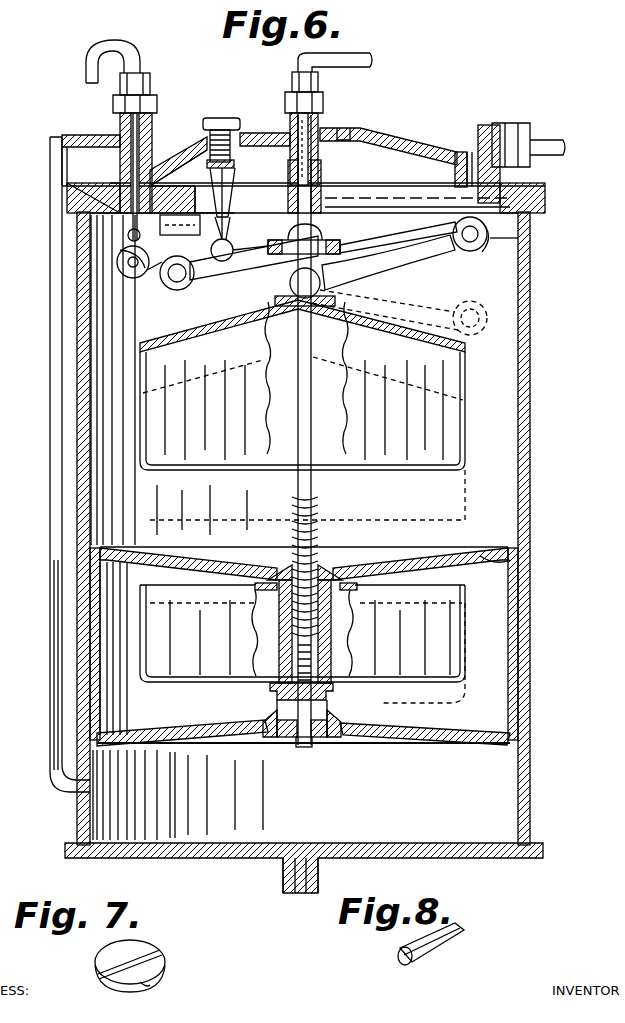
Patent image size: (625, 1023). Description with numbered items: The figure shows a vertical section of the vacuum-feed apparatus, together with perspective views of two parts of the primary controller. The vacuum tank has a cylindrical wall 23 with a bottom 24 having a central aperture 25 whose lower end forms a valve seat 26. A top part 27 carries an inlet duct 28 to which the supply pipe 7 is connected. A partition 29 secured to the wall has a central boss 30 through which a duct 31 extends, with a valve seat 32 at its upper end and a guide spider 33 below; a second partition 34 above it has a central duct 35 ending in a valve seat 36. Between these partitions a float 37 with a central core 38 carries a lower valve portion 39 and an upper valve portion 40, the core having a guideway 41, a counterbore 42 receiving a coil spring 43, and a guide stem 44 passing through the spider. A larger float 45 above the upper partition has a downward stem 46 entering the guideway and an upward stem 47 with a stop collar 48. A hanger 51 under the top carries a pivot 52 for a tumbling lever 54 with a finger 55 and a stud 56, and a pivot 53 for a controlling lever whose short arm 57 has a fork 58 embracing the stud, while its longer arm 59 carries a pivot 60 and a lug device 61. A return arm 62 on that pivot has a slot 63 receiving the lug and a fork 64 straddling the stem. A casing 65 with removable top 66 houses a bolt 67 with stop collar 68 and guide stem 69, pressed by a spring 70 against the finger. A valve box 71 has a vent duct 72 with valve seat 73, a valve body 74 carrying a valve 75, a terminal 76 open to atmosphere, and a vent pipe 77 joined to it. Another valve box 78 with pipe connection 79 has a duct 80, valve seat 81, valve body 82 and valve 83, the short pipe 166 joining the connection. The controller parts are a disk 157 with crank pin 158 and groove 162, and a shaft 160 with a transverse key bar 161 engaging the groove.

In FIG. 6, the supply pipe 7 is at (545, 143).
In FIG. 6, the cylindrical wall 23 is at (530, 495).
In FIG. 6, the bottom 24 is at (188, 857).
In FIG. 6, the central aperture 25 is at (285, 873).
In FIG. 6, the valve seat 26 is at (302, 893).
In FIG. 6, the top part 27 is at (370, 128).
In FIG. 6, the inlet duct 28 is at (465, 148).
In FIG. 6, the partition 29 is at (490, 737).
In FIG. 6, the central boss 30 is at (343, 740).
In FIG. 6, the duct 31 is at (342, 724).
In FIG. 6, the valve seat 32 is at (266, 722).
In FIG. 6, the guide spider 33 is at (318, 745).
In FIG. 6, the partition 34 is at (518, 562).
In FIG. 6, the central duct 35 is at (322, 565).
In FIG. 6, the valve seat 36 is at (340, 562).
In FIG. 6, the float 37 is at (465, 612).
In FIG. 6, the central core 38 is at (333, 660).
In FIG. 6, the valve portion 39 is at (395, 700).
In FIG. 6, the valve portion 40 is at (285, 565).
In FIG. 6, the guideway 41 is at (296, 660).
In FIG. 6, the counterbore 42 is at (280, 615).
In FIG. 6, the coil spring 43 is at (320, 512).
In FIG. 6, the guide stem 44 is at (302, 748).
In FIG. 6, the float 45 is at (462, 423).
In FIG. 6, the stem 46 is at (297, 490).
In FIG. 6, the stem 47 is at (320, 237).
In FIG. 6, the stop collar 48 is at (360, 245).
In FIG. 6, the hanger 51 is at (198, 220).
In FIG. 6, the pivot 52 is at (236, 242).
In FIG. 6, the pivot 53 is at (176, 291).
In FIG. 6, the tumbling lever 54 is at (117, 262).
In FIG. 6, the finger 55 is at (212, 197).
In FIG. 6, the stud 56 is at (128, 266).
In FIG. 6, the short arm 57 is at (140, 280).
In FIG. 6, the fork 58 is at (122, 275).
In FIG. 6, the longer arm 59 is at (216, 280).
In FIG. 6, the pivot 60 is at (472, 245).
In FIG. 6, the lug device 61 is at (490, 230).
In FIG. 6, the return arm 62 is at (425, 262).
In FIG. 6, the slot 63 is at (492, 248).
In FIG. 6, the fork 64 is at (290, 290).
In FIG. 6, the casing 65 is at (205, 136).
In FIG. 6, the removable top 66 is at (212, 128).
In FIG. 6, the bolt 67 is at (245, 215).
In FIG. 6, the stop collar 68 is at (238, 173).
In FIG. 6, the guide stem 69 is at (222, 118).
In FIG. 6, the spring 70 is at (292, 130).
In FIG. 6, the valve box 71 is at (122, 130).
In FIG. 6, the vent duct 72 is at (140, 130).
In FIG. 6, the valve seat 73 is at (130, 183).
In FIG. 6, the valve body 74 is at (128, 228).
In FIG. 6, the valve 75 is at (105, 190).
In FIG. 6, the outer end terminal 76 is at (85, 71).
In FIG. 6, the vent pipe 77 is at (50, 497).
In FIG. 6, the valve box 78 is at (322, 186).
In FIG. 6, the pipe connection 79 is at (292, 80).
In FIG. 6, the duct 80 is at (290, 105).
In FIG. 6, the valve seat 81 is at (322, 168).
In FIG. 6, the valve body 82 is at (345, 198).
In FIG. 6, the valve 83 is at (342, 128).
In FIG. 7, the disk 157 is at (166, 963).
In FIG. 7, the crank pin 158 is at (150, 985).
In FIG. 8, the shaft 160 is at (458, 948).
In FIG. 8, the transverse key bar 161 is at (396, 959).
In FIG. 7, the groove 162 is at (97, 962).
In FIG. 6, the short pipe 166 is at (372, 62).